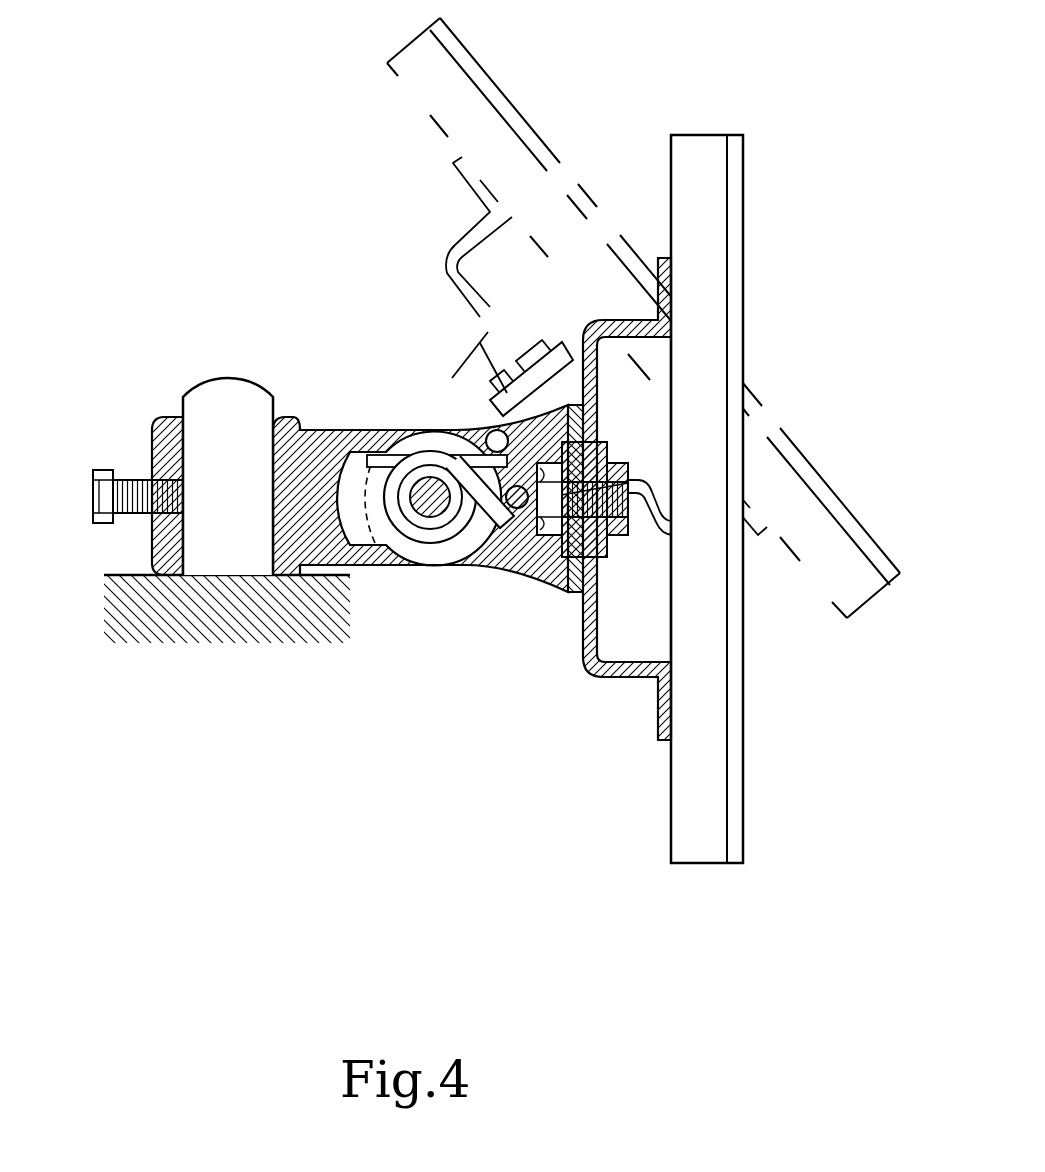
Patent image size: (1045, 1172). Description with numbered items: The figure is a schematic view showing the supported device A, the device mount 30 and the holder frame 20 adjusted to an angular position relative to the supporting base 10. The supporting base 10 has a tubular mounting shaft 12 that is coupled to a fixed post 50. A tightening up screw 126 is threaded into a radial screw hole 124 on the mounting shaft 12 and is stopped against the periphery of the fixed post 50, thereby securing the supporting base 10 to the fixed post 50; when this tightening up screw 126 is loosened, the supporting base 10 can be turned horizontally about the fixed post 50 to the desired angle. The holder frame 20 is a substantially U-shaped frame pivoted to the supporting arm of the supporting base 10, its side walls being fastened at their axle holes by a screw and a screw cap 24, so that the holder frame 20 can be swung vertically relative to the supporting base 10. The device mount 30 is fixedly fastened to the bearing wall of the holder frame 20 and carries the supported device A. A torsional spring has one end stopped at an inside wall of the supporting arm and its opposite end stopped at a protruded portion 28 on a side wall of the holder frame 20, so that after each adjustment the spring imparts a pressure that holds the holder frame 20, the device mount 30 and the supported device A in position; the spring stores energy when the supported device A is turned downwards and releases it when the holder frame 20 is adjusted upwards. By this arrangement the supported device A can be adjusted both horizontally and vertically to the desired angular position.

The supporting base 10 is at (303, 420).
The tubular mounting shaft 12 is at (172, 425).
The radial screw hole 124 is at (150, 485).
The tightening up screw 126 is at (75, 490).
The fixed post 50 is at (228, 390).
The holder frame 20 is at (484, 428).
The screw cap 24 is at (430, 513).
The protruded portion 28 is at (520, 528).
The device mount 30 is at (612, 670).
The supported device A is at (687, 833).